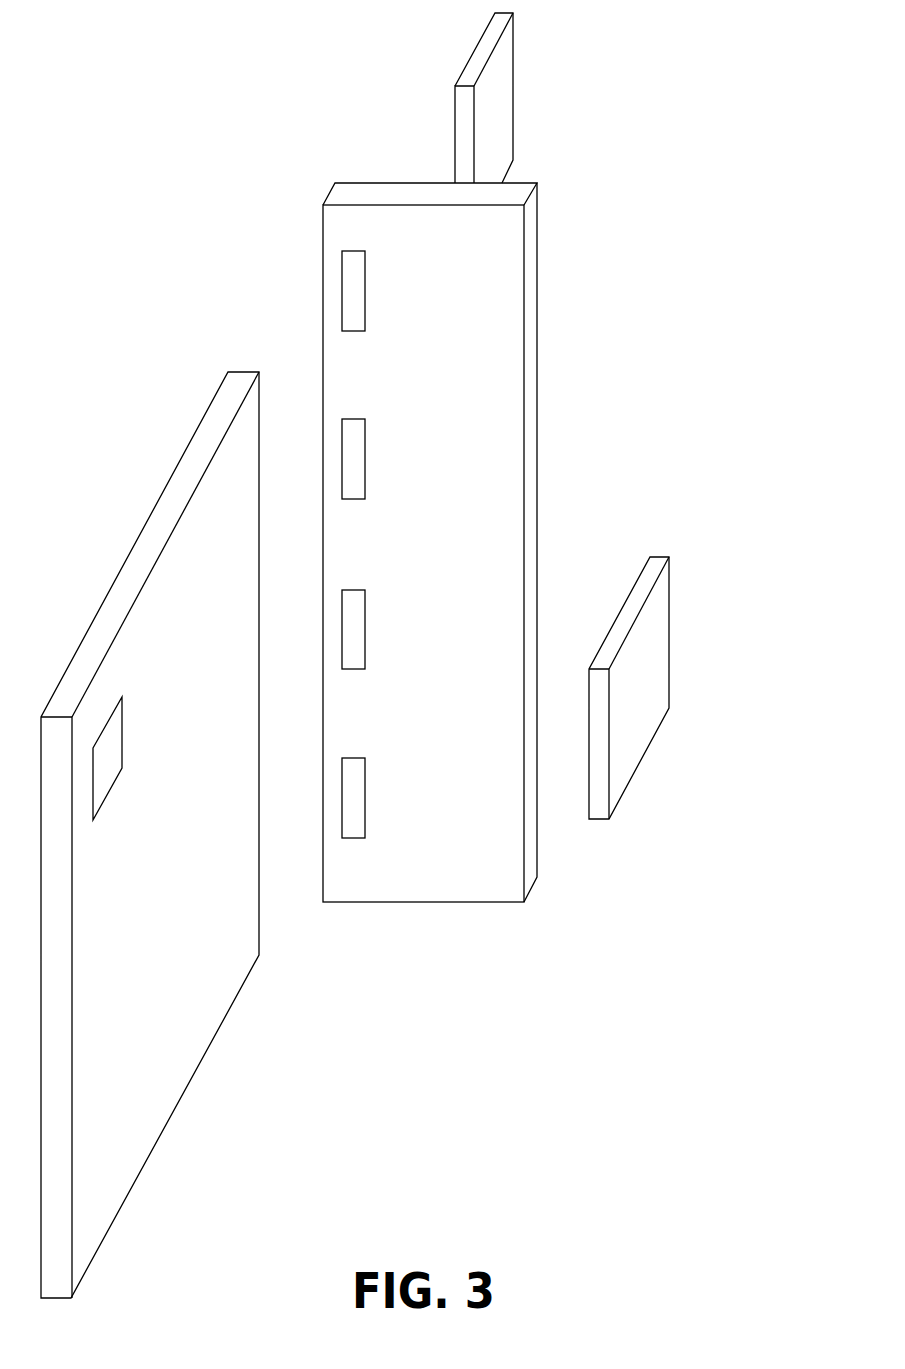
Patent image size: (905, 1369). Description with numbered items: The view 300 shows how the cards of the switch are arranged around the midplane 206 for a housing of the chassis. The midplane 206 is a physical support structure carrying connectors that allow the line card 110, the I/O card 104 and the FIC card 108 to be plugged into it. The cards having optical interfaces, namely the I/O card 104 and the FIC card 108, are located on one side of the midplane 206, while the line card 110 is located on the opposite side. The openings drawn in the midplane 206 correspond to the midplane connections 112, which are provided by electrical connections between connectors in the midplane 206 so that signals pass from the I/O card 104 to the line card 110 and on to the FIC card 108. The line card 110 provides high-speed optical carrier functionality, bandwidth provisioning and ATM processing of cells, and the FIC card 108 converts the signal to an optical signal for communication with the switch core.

The view 300 is at (616, 420).
The midplane 206 is at (380, 183).
The midplane connections 112 is at (357, 298).
The I/O card 104 is at (552, 166).
The line card 110 is at (234, 316).
The FIC card 108 is at (598, 857).